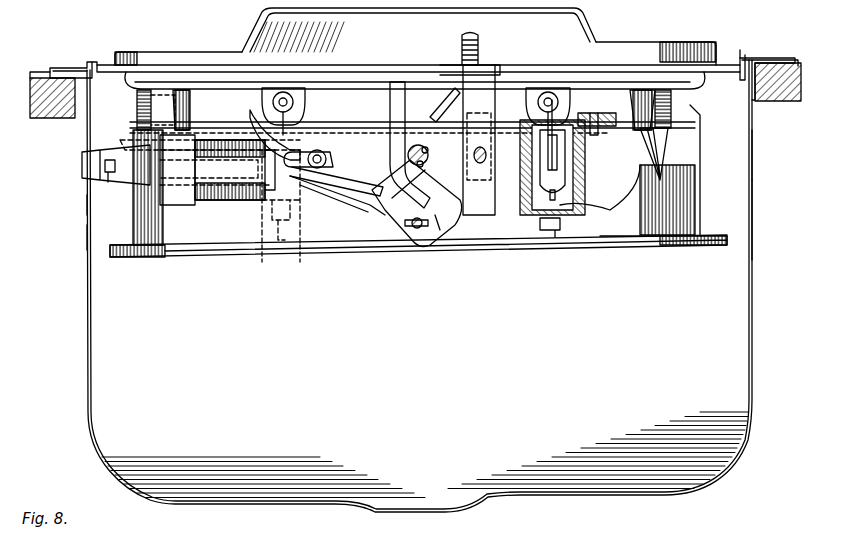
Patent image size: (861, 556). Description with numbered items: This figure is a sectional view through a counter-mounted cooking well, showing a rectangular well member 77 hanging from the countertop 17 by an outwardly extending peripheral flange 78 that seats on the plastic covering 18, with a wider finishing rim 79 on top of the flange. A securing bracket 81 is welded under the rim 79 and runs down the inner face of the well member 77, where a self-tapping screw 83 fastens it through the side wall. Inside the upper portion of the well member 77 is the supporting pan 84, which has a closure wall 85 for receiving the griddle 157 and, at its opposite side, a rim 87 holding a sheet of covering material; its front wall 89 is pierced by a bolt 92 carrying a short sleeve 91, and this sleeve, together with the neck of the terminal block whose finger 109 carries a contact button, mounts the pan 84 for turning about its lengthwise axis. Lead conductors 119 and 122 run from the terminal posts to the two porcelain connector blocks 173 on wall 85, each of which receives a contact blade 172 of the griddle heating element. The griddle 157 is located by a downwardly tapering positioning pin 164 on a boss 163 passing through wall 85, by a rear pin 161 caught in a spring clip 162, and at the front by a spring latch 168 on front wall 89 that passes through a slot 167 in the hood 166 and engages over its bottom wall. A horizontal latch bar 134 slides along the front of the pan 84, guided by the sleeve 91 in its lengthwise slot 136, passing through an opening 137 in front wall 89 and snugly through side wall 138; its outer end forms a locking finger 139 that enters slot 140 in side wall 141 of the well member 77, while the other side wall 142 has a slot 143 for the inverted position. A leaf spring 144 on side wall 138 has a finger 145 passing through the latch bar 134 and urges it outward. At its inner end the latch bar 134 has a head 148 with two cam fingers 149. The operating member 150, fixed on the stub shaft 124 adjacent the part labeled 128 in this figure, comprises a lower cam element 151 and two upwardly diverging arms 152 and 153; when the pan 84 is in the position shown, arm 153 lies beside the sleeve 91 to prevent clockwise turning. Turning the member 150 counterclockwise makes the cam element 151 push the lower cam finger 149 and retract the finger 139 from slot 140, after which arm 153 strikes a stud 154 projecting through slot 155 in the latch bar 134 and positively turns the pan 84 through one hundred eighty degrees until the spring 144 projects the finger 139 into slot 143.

The top 17 is at (52, 105).
The covering 18 is at (31, 76).
The well member 77 is at (79, 308).
The peripheral flange 78 is at (61, 68).
The finishing rim 79 is at (94, 63).
The securing bracket 81 is at (752, 56).
The self-tapping screw 83 is at (738, 55).
The supporting tray or pan 84 is at (169, 246).
The closure wall 85 is at (623, 130).
The rim 87 is at (672, 247).
The front wall 89 is at (620, 218).
The sleeve 91 is at (427, 150).
The bolt 92 is at (423, 165).
The finger 109 is at (470, 212).
The conductor 119 is at (305, 256).
The conductor 122 is at (568, 238).
The stub shaft 124 is at (410, 225).
The bracket arm 128 is at (437, 228).
The latch bar 134 is at (240, 192).
The lengthwise slot 136 is at (406, 154).
The opening 137 is at (210, 190).
The side wall 138 is at (133, 222).
The locking finger 139 is at (82, 164).
The slot 140 is at (60, 206).
The side wall 141 is at (85, 236).
The side wall 142 is at (755, 218).
The slot 143 is at (757, 158).
The leaf spring 144 is at (125, 146).
The finger 145 is at (105, 170).
The head 148 is at (478, 130).
The cam finger 149 is at (420, 112).
The operating member 150 is at (370, 213).
The cam element 151 is at (428, 252).
The arm 152 is at (392, 170).
The arm 153 is at (390, 105).
The stud 154 is at (319, 150).
The slot 155 is at (290, 150).
The griddle 157 is at (668, 40).
The pin 161 is at (136, 98).
The spring clip 162 is at (695, 108).
The boss 163 is at (215, 100).
The positioning pin 164 is at (627, 181).
The hood 166 is at (582, 16).
The slot 167 is at (500, 58).
The spring latch 168 is at (466, 33).
The contact blade 172 is at (304, 100).
The connector block 173 is at (260, 245).